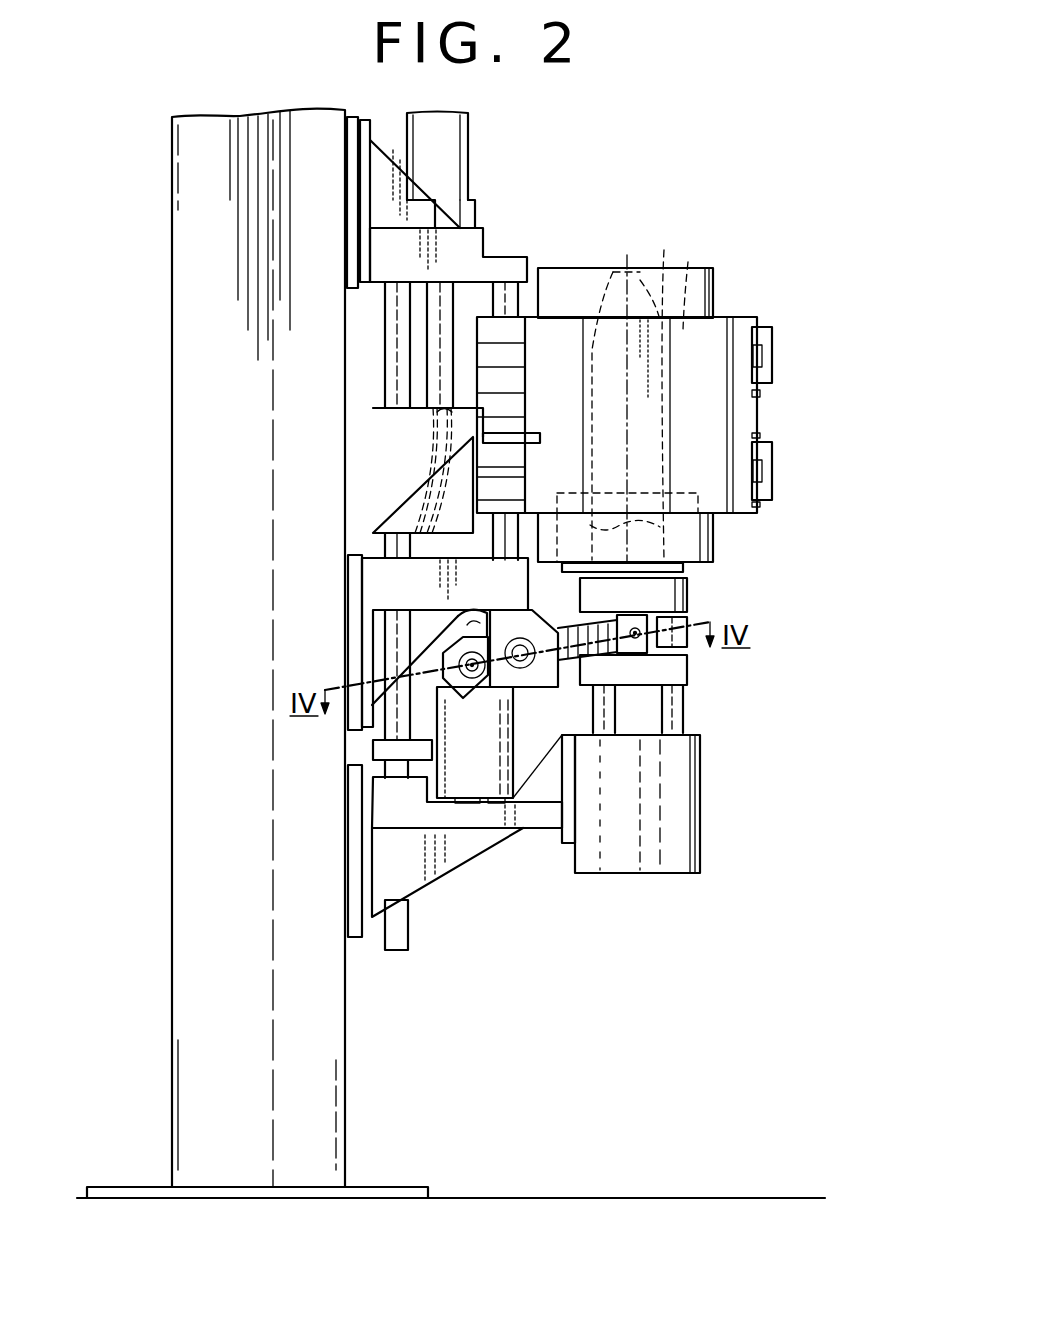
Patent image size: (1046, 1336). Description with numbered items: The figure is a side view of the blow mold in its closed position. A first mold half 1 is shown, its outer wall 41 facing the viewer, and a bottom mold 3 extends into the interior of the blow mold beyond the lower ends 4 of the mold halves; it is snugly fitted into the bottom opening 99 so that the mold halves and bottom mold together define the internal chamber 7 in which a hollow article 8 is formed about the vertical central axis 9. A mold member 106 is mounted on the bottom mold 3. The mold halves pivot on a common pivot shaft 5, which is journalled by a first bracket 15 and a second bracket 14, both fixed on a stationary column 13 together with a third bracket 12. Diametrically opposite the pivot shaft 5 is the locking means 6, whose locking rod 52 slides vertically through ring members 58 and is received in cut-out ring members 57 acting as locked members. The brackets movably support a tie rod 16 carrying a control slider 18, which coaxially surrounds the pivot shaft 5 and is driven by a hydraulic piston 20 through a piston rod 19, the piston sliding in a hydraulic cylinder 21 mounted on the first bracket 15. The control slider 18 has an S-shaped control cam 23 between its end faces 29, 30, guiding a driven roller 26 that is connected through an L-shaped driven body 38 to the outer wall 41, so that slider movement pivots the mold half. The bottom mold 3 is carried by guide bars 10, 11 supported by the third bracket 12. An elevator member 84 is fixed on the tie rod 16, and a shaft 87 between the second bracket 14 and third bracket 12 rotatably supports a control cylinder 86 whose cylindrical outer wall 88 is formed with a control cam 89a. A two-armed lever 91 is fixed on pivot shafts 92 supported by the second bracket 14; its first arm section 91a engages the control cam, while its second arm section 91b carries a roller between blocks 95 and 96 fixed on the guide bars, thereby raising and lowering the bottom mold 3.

The first mold half 1 is at (742, 510).
The bottom mold 3 is at (705, 553).
The lower ends 4 is at (540, 530).
The pivot shaft 5 is at (518, 305).
The locking means 6 is at (786, 397).
The internal chamber 7 is at (670, 316).
The hollow article 8 is at (662, 275).
The central axis 9 is at (627, 258).
The guide bar 10 is at (602, 695).
The guide bar 11 is at (685, 708).
The third bracket 12 is at (545, 818).
The stationary column 13 is at (328, 1031).
The second bracket 14 is at (385, 585).
The first bracket 15 is at (385, 248).
The tie rod 16 is at (393, 323).
The control slider 18 is at (385, 473).
The piston rod 19 is at (440, 336).
The hydraulic piston 20 is at (450, 165).
The hydraulic cylinder 21 is at (470, 132).
The control cam 23 is at (432, 490).
The driven roller 26 is at (440, 413).
The end face 29 is at (375, 410).
The end face 30 is at (463, 540).
The L-shaped driven body 38 is at (530, 436).
The outer wall 41 is at (712, 427).
The locking rod 52 is at (733, 322).
The cut-out ring member 57 is at (765, 330).
The ring member 58 is at (758, 356).
The elevator member 84 is at (383, 749).
The control cylinder 86 is at (505, 688).
The shaft 87 is at (462, 805).
The cylindrical outer wall 88 is at (513, 770).
The control cam 89a is at (458, 636).
The two-armed lever 91 is at (587, 667).
The first arm section 91a is at (455, 690).
The second arm section 91b is at (640, 617).
The pivot shaft 92 is at (530, 622).
The block 95 is at (685, 590).
The block 96 is at (690, 673).
The bottom opening 99 is at (683, 495).
The mold member 106 is at (596, 498).